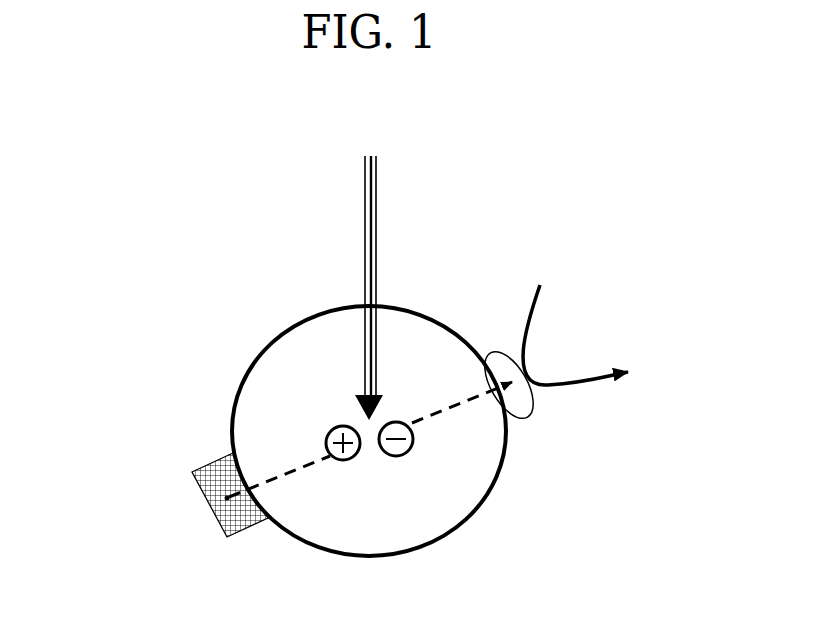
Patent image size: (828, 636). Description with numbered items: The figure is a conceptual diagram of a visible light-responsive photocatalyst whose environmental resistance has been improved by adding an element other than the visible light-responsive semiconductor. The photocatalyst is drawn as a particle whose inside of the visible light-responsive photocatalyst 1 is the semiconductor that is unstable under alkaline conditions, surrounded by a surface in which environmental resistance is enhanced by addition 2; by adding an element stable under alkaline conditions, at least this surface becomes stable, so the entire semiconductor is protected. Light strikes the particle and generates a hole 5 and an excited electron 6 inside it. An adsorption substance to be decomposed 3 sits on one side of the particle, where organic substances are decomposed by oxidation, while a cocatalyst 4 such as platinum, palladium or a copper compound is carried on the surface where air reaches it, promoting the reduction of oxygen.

The inside of visible light-responsive photocatalyst 1 is at (334, 412).
The surface in which environmental resistance is enhanced by addition 2 is at (305, 552).
The adsorption substance to be decomposed 3 is at (195, 520).
The cocatalyst 4 is at (530, 416).
The hole 5 is at (351, 468).
The excited electron 6 is at (408, 458).